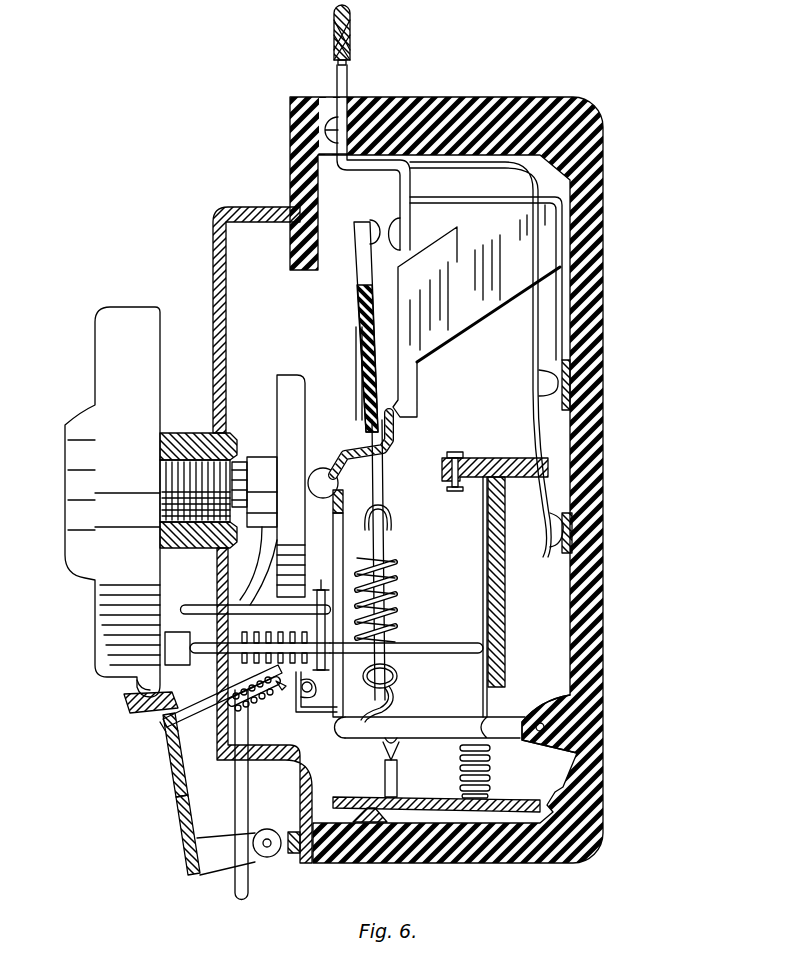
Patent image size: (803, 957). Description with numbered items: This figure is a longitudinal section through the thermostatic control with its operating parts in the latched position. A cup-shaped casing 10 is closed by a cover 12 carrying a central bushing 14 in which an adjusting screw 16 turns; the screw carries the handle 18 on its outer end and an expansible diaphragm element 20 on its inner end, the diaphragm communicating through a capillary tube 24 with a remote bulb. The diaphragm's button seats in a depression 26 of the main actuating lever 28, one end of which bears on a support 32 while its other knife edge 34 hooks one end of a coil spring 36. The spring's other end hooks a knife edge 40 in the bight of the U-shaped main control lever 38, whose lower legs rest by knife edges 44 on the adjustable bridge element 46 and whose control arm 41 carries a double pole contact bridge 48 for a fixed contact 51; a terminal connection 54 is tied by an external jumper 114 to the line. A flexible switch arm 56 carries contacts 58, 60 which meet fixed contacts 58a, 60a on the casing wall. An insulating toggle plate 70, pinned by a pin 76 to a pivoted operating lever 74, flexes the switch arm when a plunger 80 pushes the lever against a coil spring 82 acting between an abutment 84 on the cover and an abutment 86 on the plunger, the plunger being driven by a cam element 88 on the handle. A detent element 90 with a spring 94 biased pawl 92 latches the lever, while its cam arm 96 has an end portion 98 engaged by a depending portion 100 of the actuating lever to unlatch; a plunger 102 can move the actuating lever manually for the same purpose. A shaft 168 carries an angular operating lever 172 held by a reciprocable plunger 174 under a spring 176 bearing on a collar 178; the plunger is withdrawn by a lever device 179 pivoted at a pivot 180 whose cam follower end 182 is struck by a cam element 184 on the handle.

The casing 10 is at (603, 128).
The cover 12 is at (245, 207).
The bushing 14 is at (175, 434).
The adjusting screw 16 is at (185, 470).
The handle 18 is at (128, 307).
The diaphragm element 20 is at (288, 376).
The capillary tube 24 is at (235, 897).
The depression 26 is at (321, 468).
The main actuating lever 28 is at (343, 548).
The support 32 is at (445, 326).
The knife edge 34 is at (397, 673).
The coil spring 36 is at (397, 574).
The main control lever 38 is at (383, 485).
The knife edge 40 is at (390, 514).
The control arm 41 is at (360, 306).
The knife edge 44 is at (398, 766).
The adjustable bridge element 46 is at (426, 798).
The double pole contact bridge 48 is at (364, 222).
The fixed contact 51 is at (395, 222).
The terminal connection 54 is at (348, 82).
The flexible switch arm 56 is at (531, 298).
The contact 58 is at (541, 378).
The fixed contact 58a is at (572, 364).
The contact 60 is at (552, 518).
The fixed contact 60a is at (573, 500).
The toggle plate 70 is at (492, 458).
The operating lever 74 is at (506, 597).
The pin 76 is at (455, 452).
The plunger 80 is at (435, 643).
The coil spring 82 is at (305, 642).
The abutment 84 is at (321, 590).
The abutment 86 is at (230, 647).
The cam element 88 is at (180, 665).
The detent element 90 is at (384, 762).
The pawl 92 is at (507, 727).
The spring 94 is at (492, 770).
The cam arm 96 is at (435, 720).
The end portion 98 is at (340, 740).
The depending portion 100 is at (386, 702).
The plunger 102 is at (195, 606).
The external jumper 114 is at (352, 24).
The shaft 168 is at (300, 700).
The angular operating lever 172 is at (318, 713).
The reciprocable plunger 174 is at (212, 712).
The spring 176 is at (228, 752).
The collar 178 is at (261, 699).
The lever device 179 is at (185, 830).
The pivot 180 is at (267, 850).
The cam follower end 182 is at (130, 708).
The cam element 184 is at (135, 685).